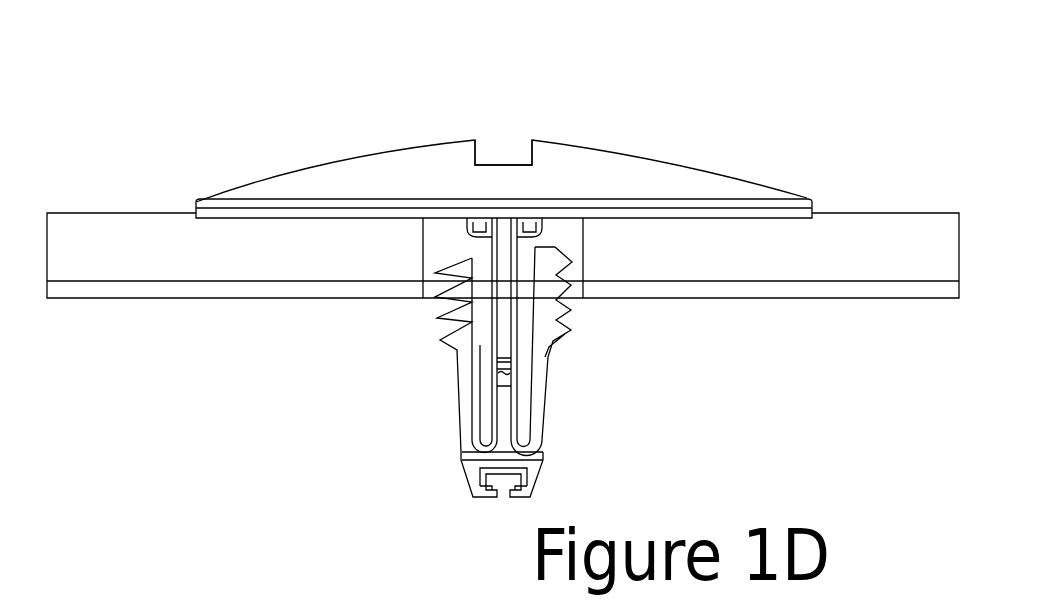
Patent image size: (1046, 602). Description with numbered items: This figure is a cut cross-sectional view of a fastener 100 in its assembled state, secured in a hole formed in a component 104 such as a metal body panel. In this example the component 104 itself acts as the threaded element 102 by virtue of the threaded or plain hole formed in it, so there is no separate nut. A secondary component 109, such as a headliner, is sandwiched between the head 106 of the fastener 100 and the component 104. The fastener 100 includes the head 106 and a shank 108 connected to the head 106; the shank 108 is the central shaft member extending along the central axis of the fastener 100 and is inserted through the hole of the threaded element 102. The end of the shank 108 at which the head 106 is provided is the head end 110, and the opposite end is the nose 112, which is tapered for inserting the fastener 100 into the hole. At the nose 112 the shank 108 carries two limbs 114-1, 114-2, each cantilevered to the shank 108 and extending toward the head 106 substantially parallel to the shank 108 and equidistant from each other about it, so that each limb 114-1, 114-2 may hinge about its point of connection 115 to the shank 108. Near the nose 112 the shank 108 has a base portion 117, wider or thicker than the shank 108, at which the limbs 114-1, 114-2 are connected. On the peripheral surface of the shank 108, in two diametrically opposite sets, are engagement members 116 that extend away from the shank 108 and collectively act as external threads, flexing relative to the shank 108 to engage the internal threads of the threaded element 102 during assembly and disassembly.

The fastener 100 is at (504, 309).
The threaded element 102 is at (390, 285).
The component 104 is at (767, 286).
The head 106 is at (357, 174).
The shank 108 is at (500, 360).
The secondary component 109 is at (145, 236).
The head end 110 is at (507, 143).
The nose 112 is at (505, 497).
The limb 114-1 is at (465, 417).
The limb 114-2 is at (538, 408).
The point of connection 115 is at (465, 447).
The engagement members 116 is at (438, 310).
The base portion 117 is at (530, 450).